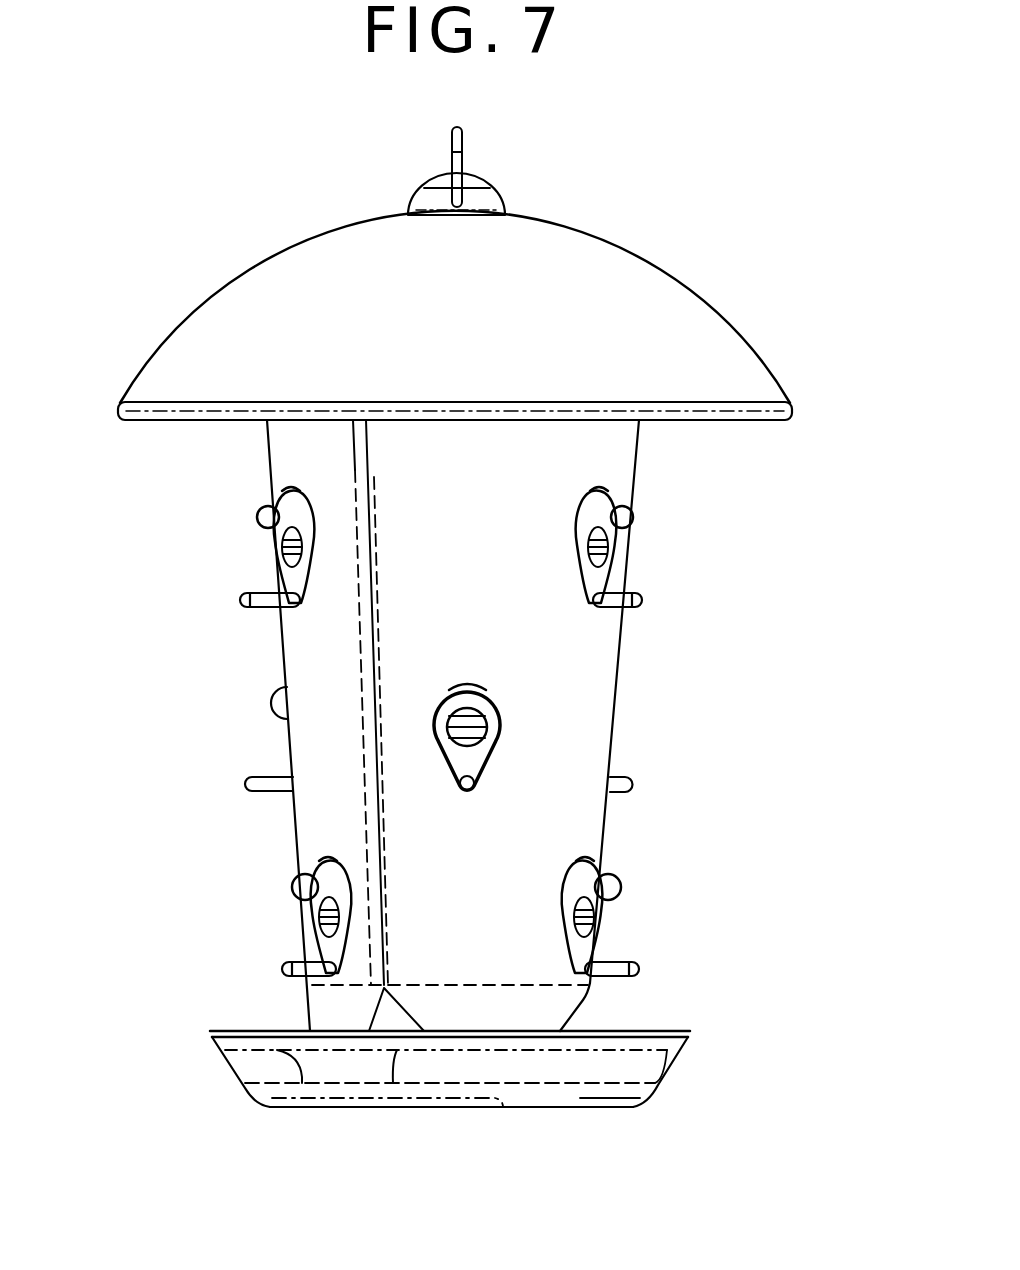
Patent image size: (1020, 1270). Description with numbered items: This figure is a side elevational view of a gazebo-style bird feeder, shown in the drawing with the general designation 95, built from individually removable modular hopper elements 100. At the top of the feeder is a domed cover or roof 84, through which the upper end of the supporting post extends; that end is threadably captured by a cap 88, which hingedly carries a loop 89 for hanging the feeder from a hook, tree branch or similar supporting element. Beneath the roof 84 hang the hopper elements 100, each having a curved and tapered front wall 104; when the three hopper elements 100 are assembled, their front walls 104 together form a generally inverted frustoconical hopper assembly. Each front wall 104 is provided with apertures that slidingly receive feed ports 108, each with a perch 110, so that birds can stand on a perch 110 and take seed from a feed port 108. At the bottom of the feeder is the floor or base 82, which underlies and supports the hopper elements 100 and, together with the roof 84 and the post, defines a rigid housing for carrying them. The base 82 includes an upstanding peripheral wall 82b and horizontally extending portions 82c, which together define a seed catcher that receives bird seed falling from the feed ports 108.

The base 82 is at (666, 1072).
The upstanding peripheral wall 82b is at (227, 1067).
The horizontally extending portions 82c is at (348, 1105).
The domed cover 84 is at (678, 322).
The cap 88 is at (482, 198).
The loop 89 is at (462, 143).
The bird feeder 95 is at (200, 696).
The hopper element 100 is at (573, 663).
The front wall 104 is at (577, 827).
The feed port 108 is at (617, 560).
The perch 110 is at (640, 601).